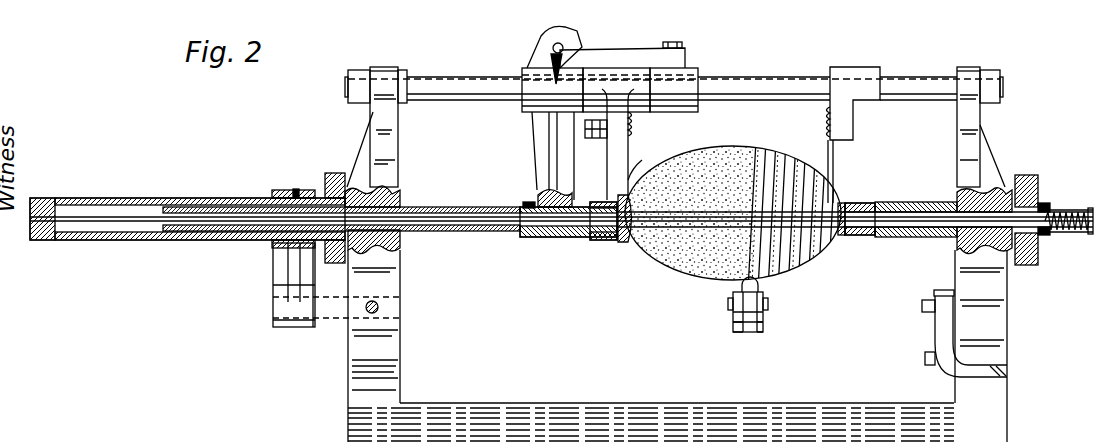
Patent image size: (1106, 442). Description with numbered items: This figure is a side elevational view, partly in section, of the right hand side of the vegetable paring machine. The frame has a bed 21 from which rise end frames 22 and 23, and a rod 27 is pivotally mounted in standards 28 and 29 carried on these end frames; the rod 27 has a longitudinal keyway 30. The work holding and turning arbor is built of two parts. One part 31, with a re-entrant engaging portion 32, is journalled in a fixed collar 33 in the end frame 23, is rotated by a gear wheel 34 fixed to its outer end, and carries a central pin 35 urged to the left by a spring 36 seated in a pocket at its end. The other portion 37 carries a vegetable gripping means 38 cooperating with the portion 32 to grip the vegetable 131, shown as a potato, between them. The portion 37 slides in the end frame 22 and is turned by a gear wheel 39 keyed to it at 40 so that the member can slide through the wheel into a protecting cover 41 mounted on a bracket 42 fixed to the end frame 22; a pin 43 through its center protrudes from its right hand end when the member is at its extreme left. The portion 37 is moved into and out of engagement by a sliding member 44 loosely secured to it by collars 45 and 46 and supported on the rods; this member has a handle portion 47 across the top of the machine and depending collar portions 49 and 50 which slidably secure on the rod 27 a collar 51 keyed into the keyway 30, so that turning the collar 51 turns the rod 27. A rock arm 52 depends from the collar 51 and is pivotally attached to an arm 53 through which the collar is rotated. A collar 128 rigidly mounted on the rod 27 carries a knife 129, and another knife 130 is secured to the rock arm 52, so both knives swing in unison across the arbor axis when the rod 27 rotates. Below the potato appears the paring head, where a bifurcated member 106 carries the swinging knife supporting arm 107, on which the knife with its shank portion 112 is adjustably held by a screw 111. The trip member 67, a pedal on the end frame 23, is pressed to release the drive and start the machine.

The bed 21 is at (478, 405).
The end frame 22 is at (356, 340).
The end frame 23 is at (1000, 314).
The rod 27 is at (912, 80).
The standard 28 is at (373, 113).
The standard 29 is at (975, 128).
The keyway 30 is at (462, 78).
The arbor portion 31 is at (862, 238).
The re-entrant engaging portion 32 is at (843, 203).
The fixed collar 33 is at (917, 238).
The gear wheel 34 is at (1036, 188).
The pin 35 is at (915, 202).
The spring 36 is at (1062, 210).
The arbor portion 37 is at (600, 241).
The vegetable gripping means 38 is at (621, 243).
The gear wheel 39 is at (330, 176).
The key 40 is at (292, 189).
The protecting cover 41 is at (184, 241).
The bracket 42 is at (275, 306).
The pin 43 is at (107, 222).
The sliding member 44 is at (538, 135).
The collar 45 is at (526, 238).
The collar 46 is at (622, 52).
The handle portion 47 is at (583, 20).
The collar portion 49 is at (532, 82).
The collar portion 50 is at (688, 72).
The collar 51 is at (640, 116).
The rock arm 52 is at (617, 130).
The arm 53 is at (600, 139).
The trip member 67 is at (990, 366).
The bifurcated member 106 is at (740, 332).
The knife supporting arm 107 is at (756, 332).
The screw 111 is at (766, 304).
The shank portion 112 is at (760, 283).
The collar 128 is at (862, 68).
The knife 129 is at (835, 162).
The knife 130 is at (636, 165).
The vegetable 131 is at (688, 276).